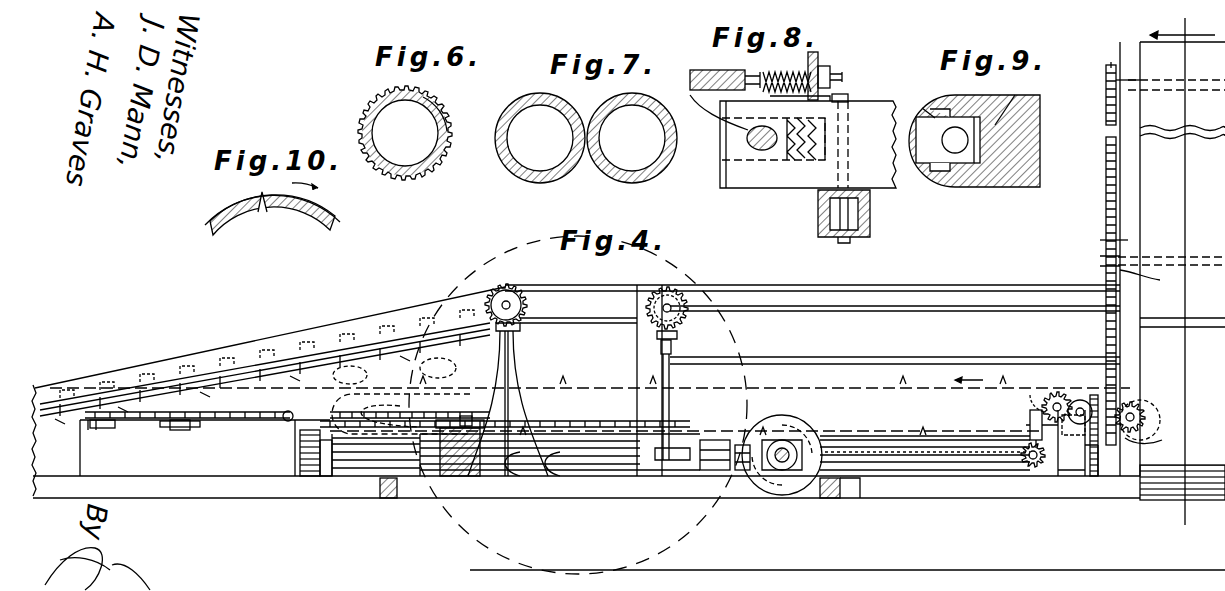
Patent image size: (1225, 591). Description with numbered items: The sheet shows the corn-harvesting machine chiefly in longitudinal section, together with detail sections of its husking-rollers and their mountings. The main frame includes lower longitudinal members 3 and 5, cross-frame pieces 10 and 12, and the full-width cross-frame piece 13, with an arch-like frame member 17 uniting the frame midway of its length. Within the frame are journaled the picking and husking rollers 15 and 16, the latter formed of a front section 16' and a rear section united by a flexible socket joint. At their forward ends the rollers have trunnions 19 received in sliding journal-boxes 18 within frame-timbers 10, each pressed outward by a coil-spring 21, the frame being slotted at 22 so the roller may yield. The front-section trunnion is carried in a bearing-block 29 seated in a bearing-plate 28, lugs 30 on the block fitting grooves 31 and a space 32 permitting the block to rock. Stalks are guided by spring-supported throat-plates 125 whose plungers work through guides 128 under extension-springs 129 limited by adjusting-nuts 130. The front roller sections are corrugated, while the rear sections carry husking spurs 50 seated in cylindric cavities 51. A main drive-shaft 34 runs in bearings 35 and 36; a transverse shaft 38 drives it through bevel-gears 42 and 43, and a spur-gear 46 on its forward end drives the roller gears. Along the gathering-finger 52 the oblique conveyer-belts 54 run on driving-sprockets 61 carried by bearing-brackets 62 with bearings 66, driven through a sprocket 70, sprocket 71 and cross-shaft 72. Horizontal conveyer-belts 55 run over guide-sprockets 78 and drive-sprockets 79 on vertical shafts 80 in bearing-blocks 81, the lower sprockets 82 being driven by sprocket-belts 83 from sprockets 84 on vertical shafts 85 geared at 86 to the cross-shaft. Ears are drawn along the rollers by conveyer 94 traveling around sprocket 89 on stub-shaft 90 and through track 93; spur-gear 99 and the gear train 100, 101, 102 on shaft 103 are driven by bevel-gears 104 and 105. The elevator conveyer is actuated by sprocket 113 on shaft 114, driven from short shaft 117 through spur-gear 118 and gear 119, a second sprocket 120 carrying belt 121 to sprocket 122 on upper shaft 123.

In FIG. 12, the lower longitudinally-extending frame member 3 is at (1185, 532).
In FIG. 4, the lower longitudinally-extending frame member 3 is at (582, 498).
In FIG. 8, the lower longitudinally-extending frame member 5 is at (870, 215).
In FIG. 8, the cross-frame piece 10 is at (752, 182).
In FIG. 4, the cross-frame piece 12 is at (842, 498).
In FIG. 4, the cross-frame piece 13 is at (1120, 322).
In FIG. 4, the picking and husking roller 15 is at (915, 478).
In FIG. 6, the picking and husking roller 16 is at (394, 133).
In FIG. 4, the picking and husking roller 16 is at (609, 480).
In FIG. 6, the roller-section 16' is at (445, 107).
In FIG. 4, the arch-like frame member 17 is at (648, 360).
In FIG. 8, the journal-box 18 is at (724, 152).
In FIG. 8, the trunnion 19 is at (715, 109).
In FIG. 8, the coil-spring 21 is at (820, 118).
In FIG. 8, the slot 22 is at (766, 150).
In FIG. 9, the bearing-plate 28 is at (985, 175).
In FIG. 9, the bearing-block 29 is at (940, 163).
In FIG. 9, the trunnion-like lug 30 is at (958, 117).
In FIG. 9, the groove 31 is at (930, 112).
In FIG. 9, the space 32 is at (1012, 88).
In FIG. 4, the space 32 is at (1073, 436).
In FIG. 4, the main drive-shaft 34 is at (946, 456).
In FIG. 4, the bearing 35 is at (352, 476).
In FIG. 4, the bearing 36 is at (715, 440).
In FIG. 4, the transversely-arranged shaft 38 is at (781, 472).
In FIG. 4, the bevel-gear 42 is at (807, 427).
In FIG. 4, the bevel-gear 43 is at (760, 440).
In FIG. 4, the spur-gear 46 is at (302, 478).
In FIG. 10, the spur 50 is at (258, 196).
In FIG. 10, the cylindric cavity 51 is at (262, 222).
In FIG. 4, the inclined conveyor 52 is at (206, 350).
In FIG. 4, the conveyer-belt 54 is at (236, 382).
In FIG. 4, the conveyer-belt 55 is at (222, 422).
In FIG. 4, the driving-sprocket 61 is at (528, 320).
In FIG. 4, the bearing-bracket 62 is at (516, 372).
In FIG. 4, the bearing 66 is at (520, 327).
In FIG. 4, the sprocket 70 is at (523, 306).
In FIG. 4, the sprocket 71 is at (684, 298).
In FIG. 4, the cross-shaft 72 is at (682, 298).
In FIG. 4, the guide-sprocket 78 is at (104, 424).
In FIG. 4, the drive-sprocket 79 is at (480, 422).
In FIG. 4, the vertical shaft 80 is at (468, 422).
In FIG. 4, the bearing-block 81 is at (466, 472).
In FIG. 4, the sprocket 82 is at (430, 472).
In FIG. 4, the sprocket-belt 83 is at (590, 421).
In FIG. 4, the sprocket 84 is at (680, 427).
In FIG. 4, the vertical shaft 85 is at (670, 385).
In FIG. 4, the gear 86 is at (678, 327).
In FIG. 4, the sprocket 89 is at (1160, 422).
In FIG. 4, the stub-shaft 90 is at (330, 413).
In FIG. 4, the track 93 is at (590, 388).
In FIG. 4, the conveyer-belt 94 is at (408, 392).
In FIG. 4, the spur-gear 99 is at (1150, 410).
In FIG. 4, the gear 100 is at (1080, 400).
In FIG. 4, the gear 101 is at (1057, 392).
In FIG. 4, the gear 102 is at (1032, 395).
In FIG. 4, the shaft 103 is at (1030, 426).
In FIG. 4, the bevel-gear 104 is at (1050, 452).
In FIG. 4, the bevel-gear 105 is at (1030, 470).
In FIG. 4, the sprocket 113 is at (1104, 262).
In FIG. 4, the shaft 114 is at (1122, 248).
In FIG. 4, the short shaft 117 is at (1160, 442).
In FIG. 4, the spur-gear 118 is at (1100, 395).
In FIG. 4, the gear 119 is at (1100, 478).
In FIG. 4, the sprocket 120 is at (1160, 280).
In FIG. 8, the belt 121 is at (813, 52).
In FIG. 4, the belt 121 is at (1106, 172).
In FIG. 4, the sprocket 122 is at (1106, 80).
In FIG. 4, the shaft 123 is at (1128, 82).
In FIG. 8, the throat-plate 125 is at (722, 70).
In FIG. 4, the throat-plate 125 is at (255, 428).
In FIG. 8, the guide 128 is at (826, 66).
In FIG. 8, the extension-spring 129 is at (778, 70).
In FIG. 8, the adjusting-nut 130 is at (840, 94).